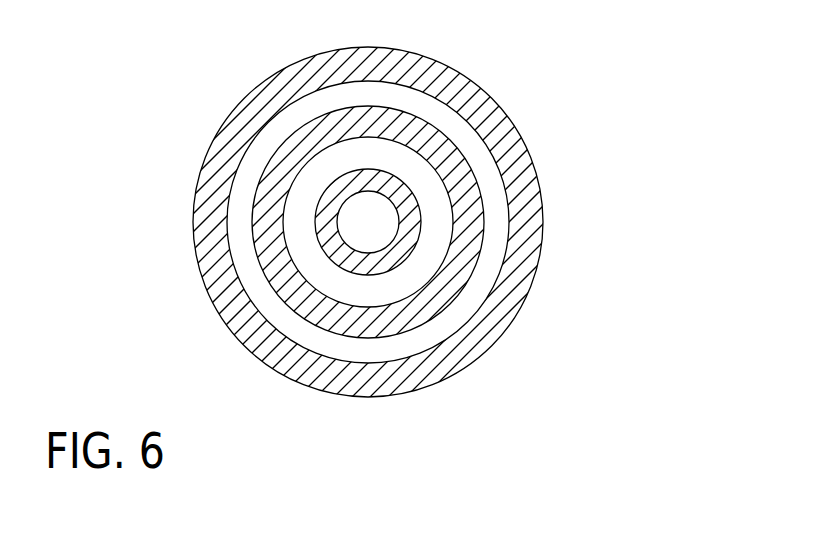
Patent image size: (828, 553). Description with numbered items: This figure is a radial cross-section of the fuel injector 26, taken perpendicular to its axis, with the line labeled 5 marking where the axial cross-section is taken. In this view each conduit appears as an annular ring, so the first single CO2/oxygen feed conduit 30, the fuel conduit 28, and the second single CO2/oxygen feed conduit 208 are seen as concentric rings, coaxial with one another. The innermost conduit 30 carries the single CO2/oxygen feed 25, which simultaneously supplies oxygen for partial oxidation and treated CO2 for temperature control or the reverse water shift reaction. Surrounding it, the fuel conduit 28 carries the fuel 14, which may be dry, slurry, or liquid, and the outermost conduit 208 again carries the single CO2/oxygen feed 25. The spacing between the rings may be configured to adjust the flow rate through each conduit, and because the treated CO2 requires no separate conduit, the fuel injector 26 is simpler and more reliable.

The fuel injector 26 is at (557, 52).
The second single CO2/oxygen feed conduit 208 is at (256, 102).
The fuel conduit 28 is at (277, 158).
The first single CO2/oxygen feed conduit 30 is at (316, 221).
The fuel 14 is at (410, 285).
The single CO2/oxygen feed 25 is at (362, 232).
The section line 5- 5 is at (132, 222).